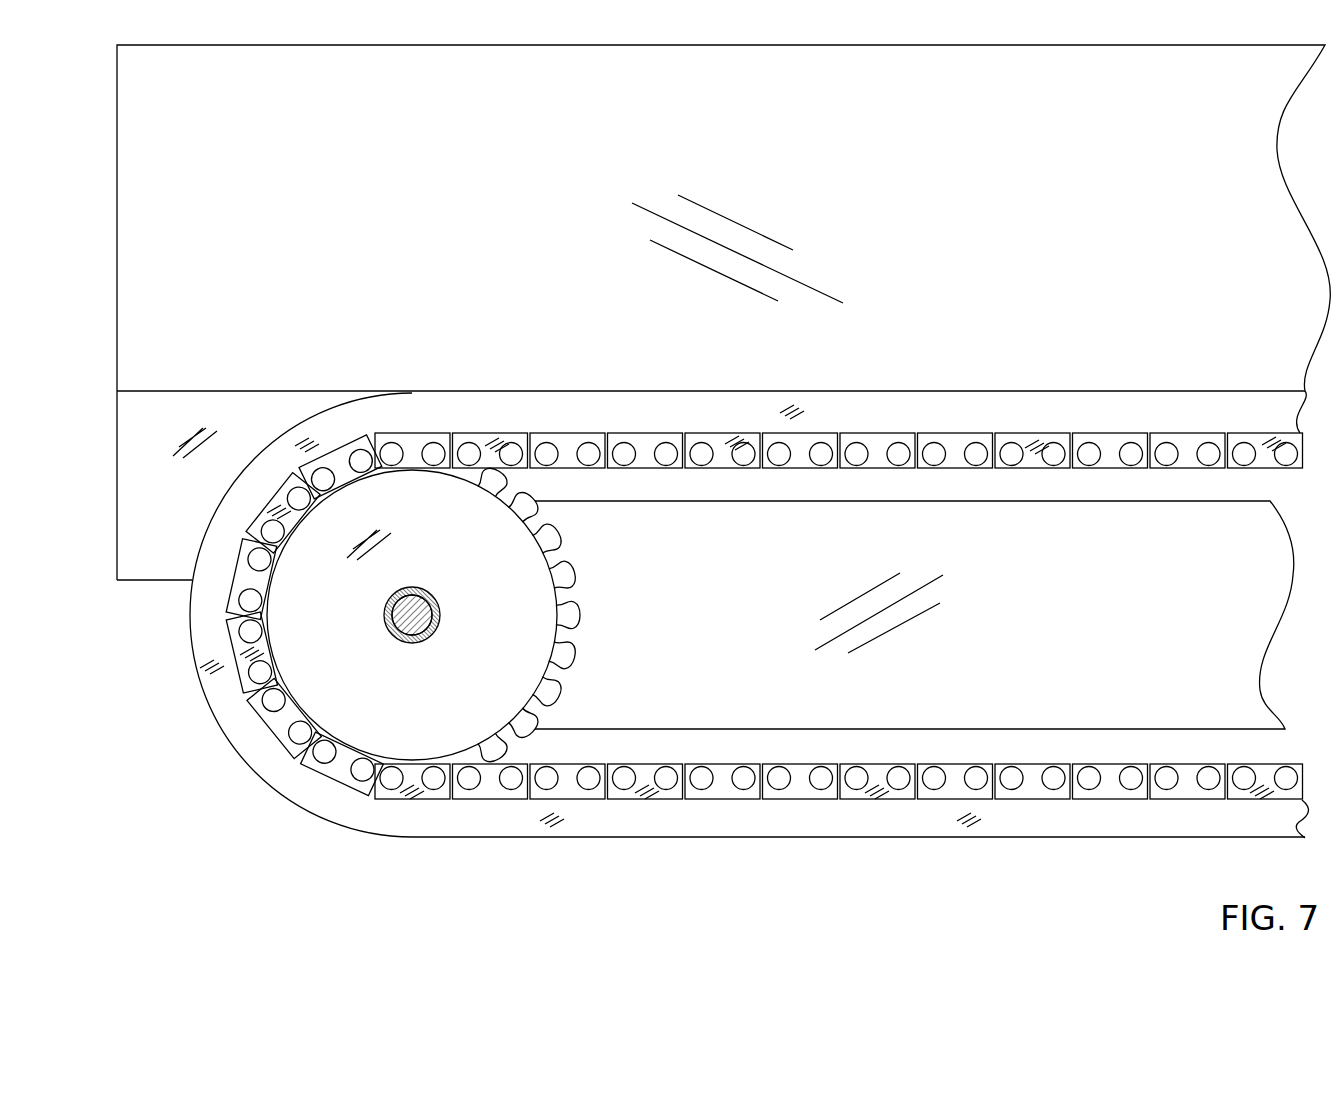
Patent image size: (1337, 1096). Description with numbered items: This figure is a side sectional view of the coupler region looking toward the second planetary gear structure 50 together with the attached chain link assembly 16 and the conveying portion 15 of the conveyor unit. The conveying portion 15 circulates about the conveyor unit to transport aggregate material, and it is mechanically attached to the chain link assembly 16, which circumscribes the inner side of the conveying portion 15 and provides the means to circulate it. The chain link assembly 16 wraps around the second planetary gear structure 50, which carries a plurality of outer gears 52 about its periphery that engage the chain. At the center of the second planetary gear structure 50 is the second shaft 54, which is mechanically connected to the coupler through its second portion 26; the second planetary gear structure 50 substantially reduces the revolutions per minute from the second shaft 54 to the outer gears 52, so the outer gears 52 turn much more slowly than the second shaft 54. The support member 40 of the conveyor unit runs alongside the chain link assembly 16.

The conveying portion 15 is at (300, 812).
The chain link assembly 16 is at (855, 793).
The second portion 26 is at (385, 617).
The support member 40 is at (900, 713).
The second planetary gear structure 50 is at (390, 737).
The outer gears 52 is at (557, 700).
The second shaft 54 is at (390, 630).